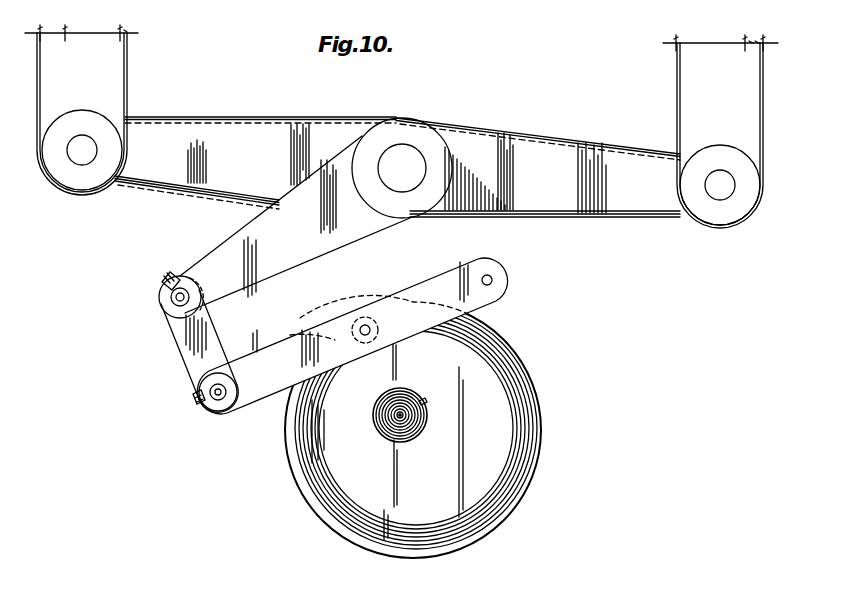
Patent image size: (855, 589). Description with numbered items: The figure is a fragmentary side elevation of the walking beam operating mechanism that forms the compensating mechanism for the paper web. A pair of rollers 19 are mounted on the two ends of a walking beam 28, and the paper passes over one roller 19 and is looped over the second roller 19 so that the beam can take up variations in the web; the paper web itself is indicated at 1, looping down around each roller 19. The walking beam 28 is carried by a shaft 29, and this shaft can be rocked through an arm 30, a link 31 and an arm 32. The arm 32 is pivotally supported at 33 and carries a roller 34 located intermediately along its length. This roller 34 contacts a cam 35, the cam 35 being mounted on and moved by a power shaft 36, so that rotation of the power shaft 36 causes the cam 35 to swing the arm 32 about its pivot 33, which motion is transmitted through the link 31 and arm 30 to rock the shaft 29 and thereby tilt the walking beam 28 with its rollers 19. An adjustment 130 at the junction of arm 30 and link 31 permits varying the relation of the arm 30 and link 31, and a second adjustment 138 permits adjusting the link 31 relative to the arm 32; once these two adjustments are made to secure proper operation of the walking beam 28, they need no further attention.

The belt 1 is at (126, 79).
The roller 19 is at (83, 115).
The walking beam 28 is at (240, 133).
The shaft 29 is at (403, 167).
The arm 30 is at (225, 245).
The link 31 is at (188, 357).
The arm 32 is at (425, 292).
The pivot 33 is at (495, 280).
The roller 34 is at (358, 320).
The cam 35 is at (503, 383).
The power shaft 36 is at (383, 422).
The adjustment 130 is at (167, 270).
The adjustment 138 is at (193, 397).